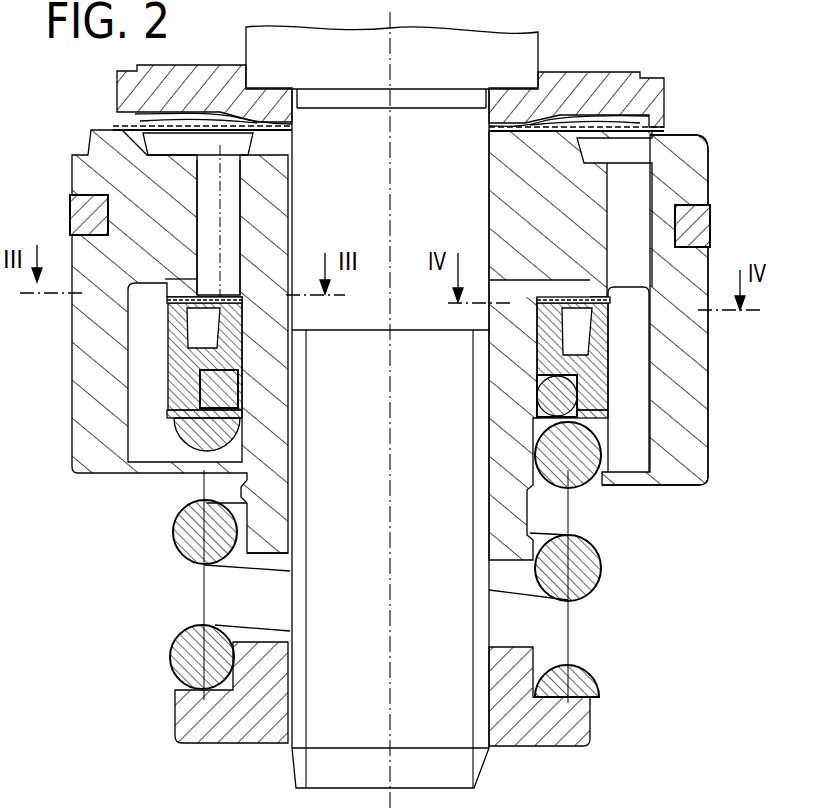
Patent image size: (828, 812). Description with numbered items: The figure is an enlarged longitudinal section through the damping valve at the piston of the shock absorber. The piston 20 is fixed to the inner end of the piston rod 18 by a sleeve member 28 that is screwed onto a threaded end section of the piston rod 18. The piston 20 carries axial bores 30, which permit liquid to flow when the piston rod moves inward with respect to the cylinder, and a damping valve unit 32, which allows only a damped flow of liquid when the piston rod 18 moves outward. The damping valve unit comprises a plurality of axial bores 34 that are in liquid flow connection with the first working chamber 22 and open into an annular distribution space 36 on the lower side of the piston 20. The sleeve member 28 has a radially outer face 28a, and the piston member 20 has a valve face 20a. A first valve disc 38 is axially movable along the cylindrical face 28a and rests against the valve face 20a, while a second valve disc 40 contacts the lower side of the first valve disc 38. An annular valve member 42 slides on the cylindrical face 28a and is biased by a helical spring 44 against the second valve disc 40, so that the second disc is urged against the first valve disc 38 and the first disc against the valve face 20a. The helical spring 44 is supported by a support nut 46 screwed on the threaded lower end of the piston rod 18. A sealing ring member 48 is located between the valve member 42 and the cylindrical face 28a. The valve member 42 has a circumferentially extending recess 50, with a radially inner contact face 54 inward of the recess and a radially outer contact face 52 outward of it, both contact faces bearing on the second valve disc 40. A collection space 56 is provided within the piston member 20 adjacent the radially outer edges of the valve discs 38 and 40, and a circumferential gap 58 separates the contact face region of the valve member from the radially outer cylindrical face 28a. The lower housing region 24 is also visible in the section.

The piston rod 18 is at (494, 57).
The piston 20 is at (719, 219).
The valve face 20a is at (595, 284).
The first working chamber 22 is at (680, 55).
The lower housing part 24 is at (681, 671).
The sleeve member 28 is at (522, 512).
The radially outer face 28a is at (173, 477).
The axial bores 30 is at (630, 193).
The damping valve unit 32 is at (159, 518).
The axial bores 34 is at (205, 172).
The annular distribution space 36 is at (70, 227).
The first valve disc 38 is at (555, 300).
The second valve disc 40 is at (168, 350).
The annular valve member 42 is at (645, 487).
The helical spring 44 is at (174, 540).
The support nut 46 is at (221, 707).
The sealing ring member 48 is at (135, 472).
The circumferentially extending recess 50 is at (605, 348).
The radially outer contact face 52 is at (180, 306).
The radially inner contact face 54 is at (612, 345).
The collection space 56 is at (152, 387).
The circumferential gap 58 is at (578, 338).